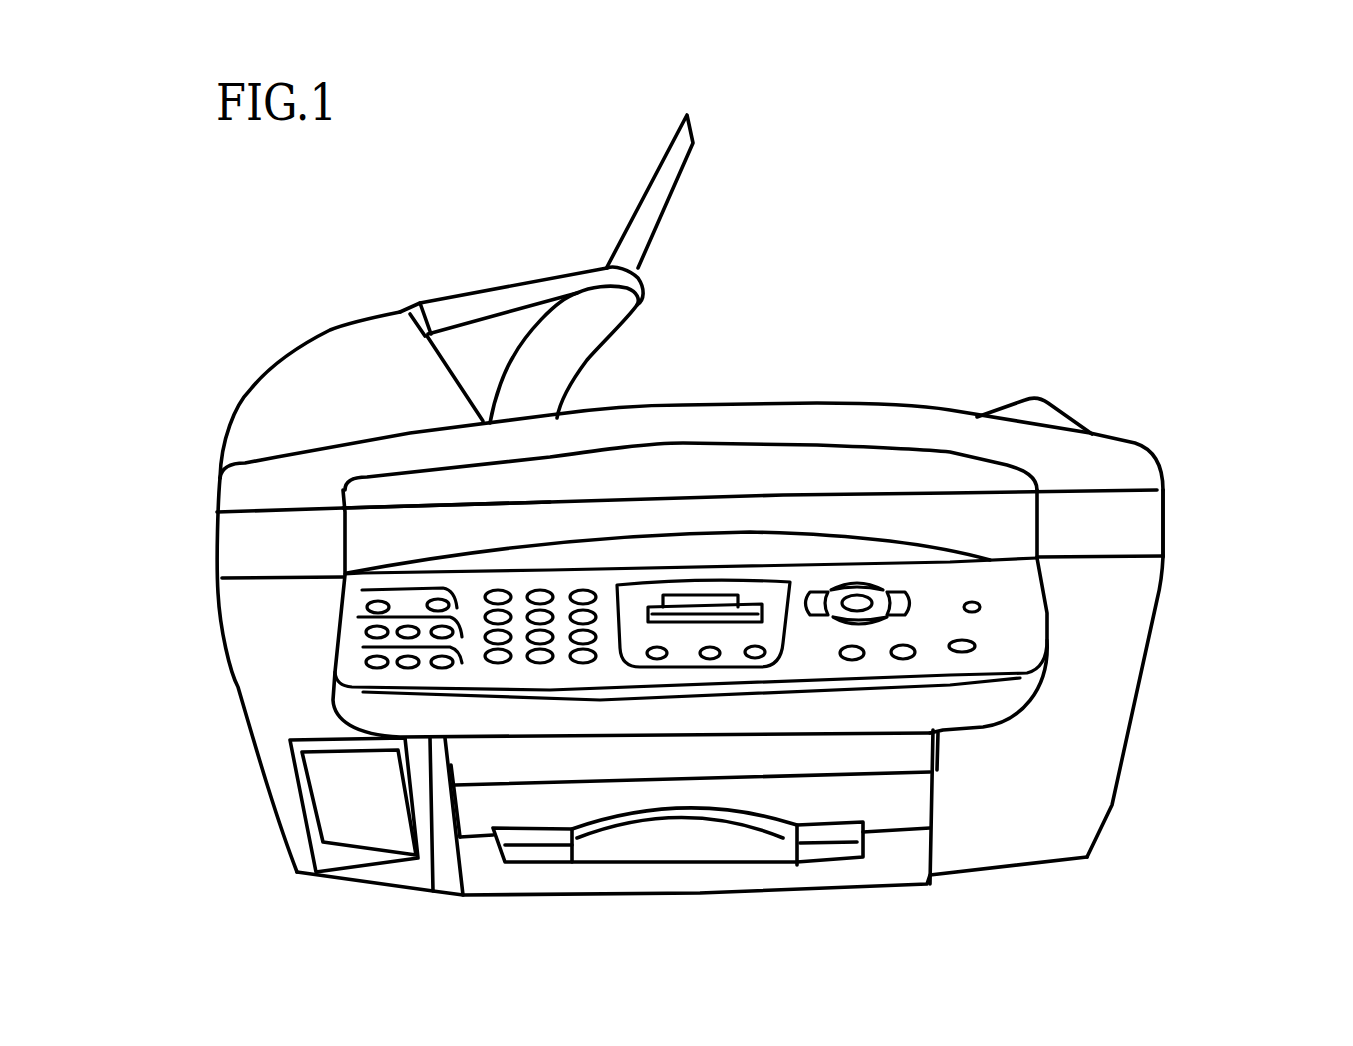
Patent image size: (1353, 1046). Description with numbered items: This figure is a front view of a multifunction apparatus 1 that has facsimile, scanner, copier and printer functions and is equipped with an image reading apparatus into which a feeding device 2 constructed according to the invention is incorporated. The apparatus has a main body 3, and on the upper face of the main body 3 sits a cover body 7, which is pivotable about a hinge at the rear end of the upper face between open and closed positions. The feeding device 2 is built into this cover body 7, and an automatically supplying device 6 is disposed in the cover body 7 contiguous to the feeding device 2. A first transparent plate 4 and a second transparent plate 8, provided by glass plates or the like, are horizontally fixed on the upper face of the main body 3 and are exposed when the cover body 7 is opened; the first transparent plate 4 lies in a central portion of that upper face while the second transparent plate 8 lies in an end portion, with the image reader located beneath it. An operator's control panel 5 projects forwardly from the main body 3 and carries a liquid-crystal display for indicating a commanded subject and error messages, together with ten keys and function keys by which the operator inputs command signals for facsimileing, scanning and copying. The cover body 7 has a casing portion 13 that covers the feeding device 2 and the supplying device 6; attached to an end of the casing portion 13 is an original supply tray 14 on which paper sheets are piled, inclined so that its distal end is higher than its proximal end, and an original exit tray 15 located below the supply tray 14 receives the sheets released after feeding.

The multifunction apparatus 1 is at (917, 280).
The feeding device 2 is at (371, 394).
The main body 3 is at (1140, 637).
The first transparent plate 4 is at (800, 495).
The operator's control panel 5 is at (1020, 610).
The automatically supplying device 6 is at (470, 313).
The cover body 7 is at (1133, 463).
The second transparent plate 8 is at (390, 503).
The casing portion 13 is at (397, 338).
The original supply tray 14 is at (677, 177).
The original exit tray 15 is at (688, 406).